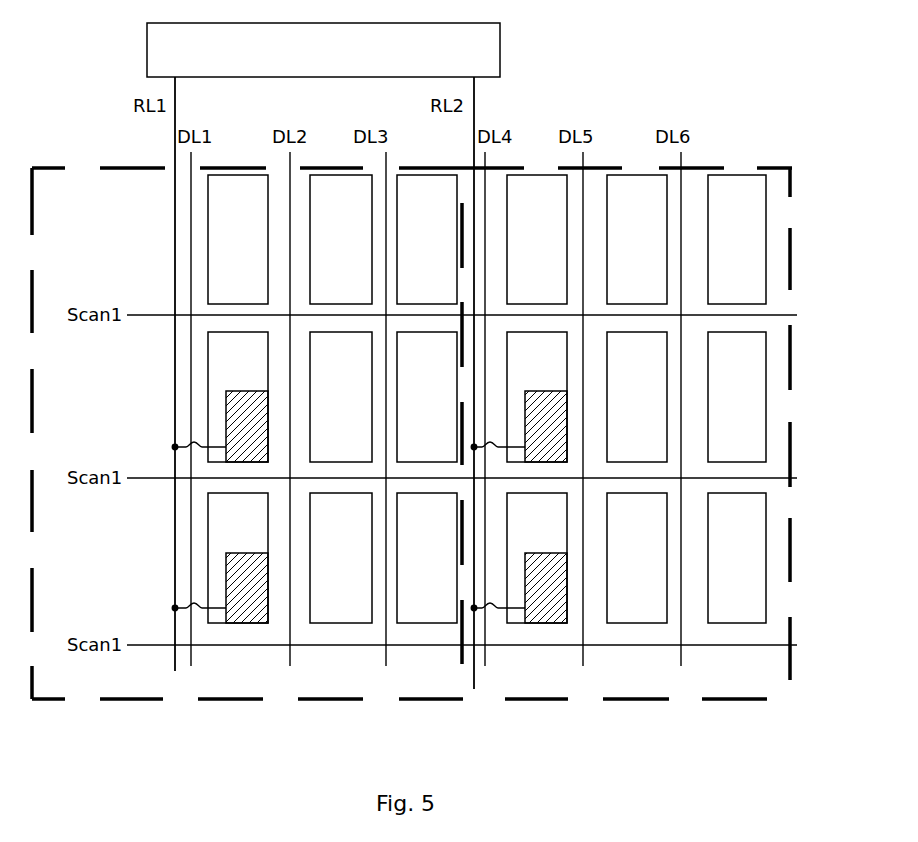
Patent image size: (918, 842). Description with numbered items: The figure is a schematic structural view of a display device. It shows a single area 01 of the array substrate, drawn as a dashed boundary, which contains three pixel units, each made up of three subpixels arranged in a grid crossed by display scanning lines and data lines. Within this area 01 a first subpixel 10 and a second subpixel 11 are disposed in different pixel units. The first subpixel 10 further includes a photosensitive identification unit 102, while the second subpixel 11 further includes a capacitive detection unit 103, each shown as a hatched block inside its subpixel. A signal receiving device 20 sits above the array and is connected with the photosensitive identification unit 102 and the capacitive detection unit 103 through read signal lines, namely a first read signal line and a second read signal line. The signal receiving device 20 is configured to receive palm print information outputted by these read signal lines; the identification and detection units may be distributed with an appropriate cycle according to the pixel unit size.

The signal receiving device 20 is at (473, 42).
The area 01 is at (62, 197).
The second subpixel 11 is at (220, 372).
The capacitive detection unit 103 is at (240, 420).
The first subpixel 10 is at (220, 526).
The photosensitive identification unit 102 is at (240, 582).